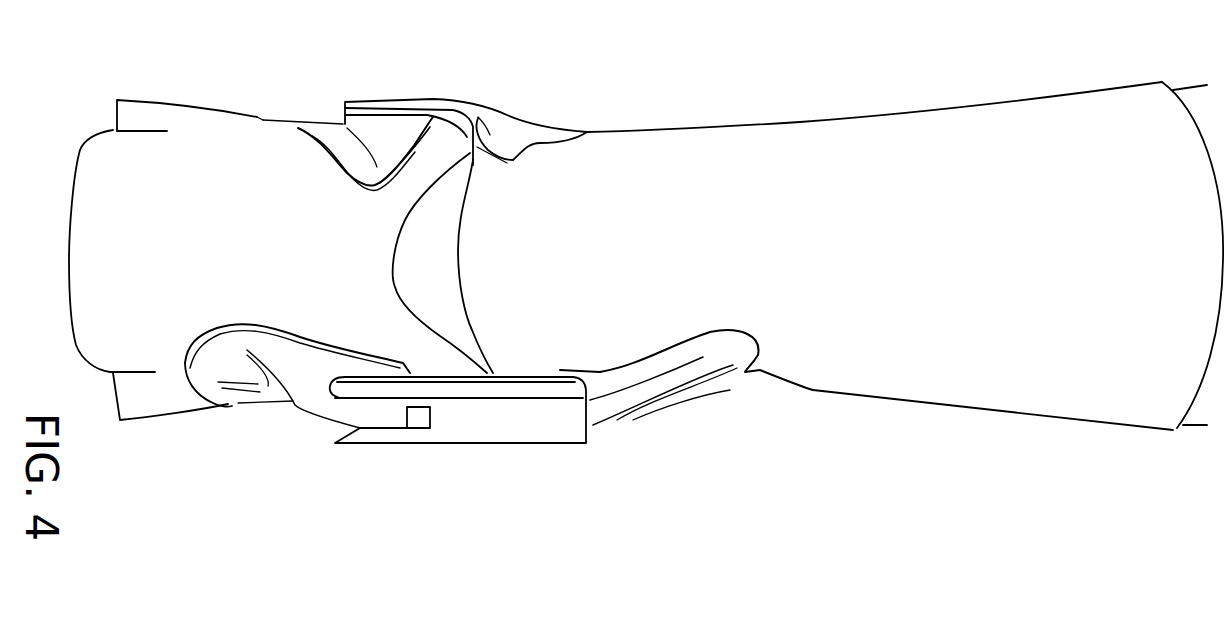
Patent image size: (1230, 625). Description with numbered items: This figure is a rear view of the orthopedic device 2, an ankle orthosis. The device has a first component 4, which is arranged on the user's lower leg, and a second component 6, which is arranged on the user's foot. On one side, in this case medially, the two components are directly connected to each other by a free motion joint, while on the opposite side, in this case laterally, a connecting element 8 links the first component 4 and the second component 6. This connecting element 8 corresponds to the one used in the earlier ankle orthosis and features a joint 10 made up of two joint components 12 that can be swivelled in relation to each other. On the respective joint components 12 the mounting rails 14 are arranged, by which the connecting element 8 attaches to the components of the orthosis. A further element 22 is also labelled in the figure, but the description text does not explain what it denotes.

The hand 2 is at (703, 370).
The forearm 4 is at (915, 370).
The back of hand 6 is at (213, 152).
The wearable device 8 is at (477, 496).
The housing 10 is at (438, 433).
The clip 12 is at (370, 412).
The body 14 is at (560, 440).
The strap 22 is at (387, 98).